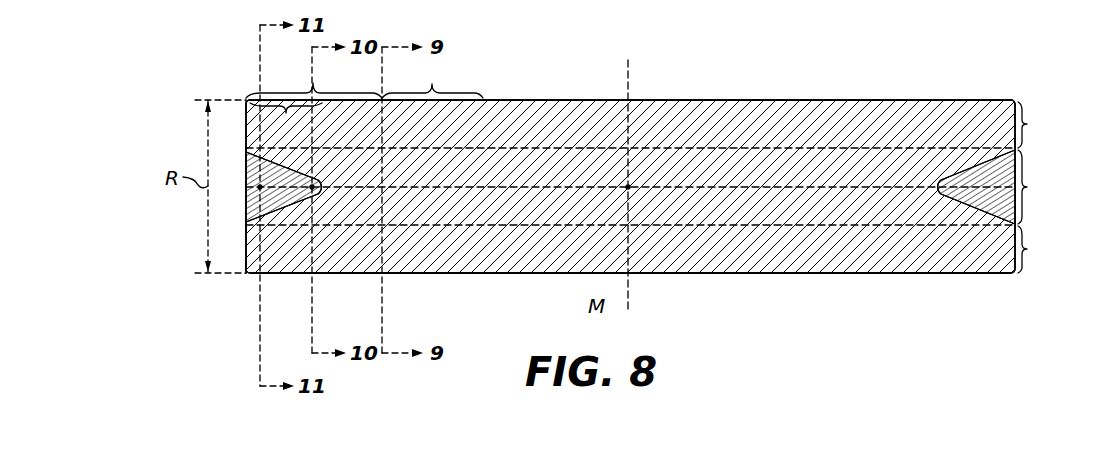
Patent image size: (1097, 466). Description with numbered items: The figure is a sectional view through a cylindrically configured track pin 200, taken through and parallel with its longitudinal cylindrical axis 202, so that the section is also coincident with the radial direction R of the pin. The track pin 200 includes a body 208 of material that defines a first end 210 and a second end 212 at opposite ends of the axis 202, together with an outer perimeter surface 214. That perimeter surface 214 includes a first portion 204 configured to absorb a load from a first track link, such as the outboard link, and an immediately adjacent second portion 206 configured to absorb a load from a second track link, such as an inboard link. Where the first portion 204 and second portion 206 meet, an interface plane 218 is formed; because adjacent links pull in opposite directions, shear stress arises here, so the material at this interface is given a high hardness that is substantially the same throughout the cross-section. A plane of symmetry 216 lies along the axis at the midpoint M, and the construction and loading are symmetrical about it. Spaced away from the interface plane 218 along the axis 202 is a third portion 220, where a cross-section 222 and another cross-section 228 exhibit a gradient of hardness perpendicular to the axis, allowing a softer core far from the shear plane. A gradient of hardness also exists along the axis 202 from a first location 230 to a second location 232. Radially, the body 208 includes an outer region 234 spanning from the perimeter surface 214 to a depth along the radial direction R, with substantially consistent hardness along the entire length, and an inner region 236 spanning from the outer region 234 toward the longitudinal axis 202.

The track pin 200 is at (960, 52).
The cylindrical axis 202 is at (458, 187).
The first portion 204 is at (313, 84).
The second portion 206 is at (432, 77).
The body 208 is at (854, 79).
The first end 210 is at (246, 137).
The second end 212 is at (1018, 108).
The perimeter surface 214 is at (558, 99).
The plane of symmetry 216 is at (630, 294).
The interface plane 218 is at (382, 249).
The third portion 220 is at (286, 125).
The cross-section 222 is at (310, 246).
The cross-section 228 is at (260, 236).
The first location 230 is at (382, 187).
The second location 232 is at (312, 187).
The outer region 234 is at (657, 187).
The inner region 236 is at (1003, 187).